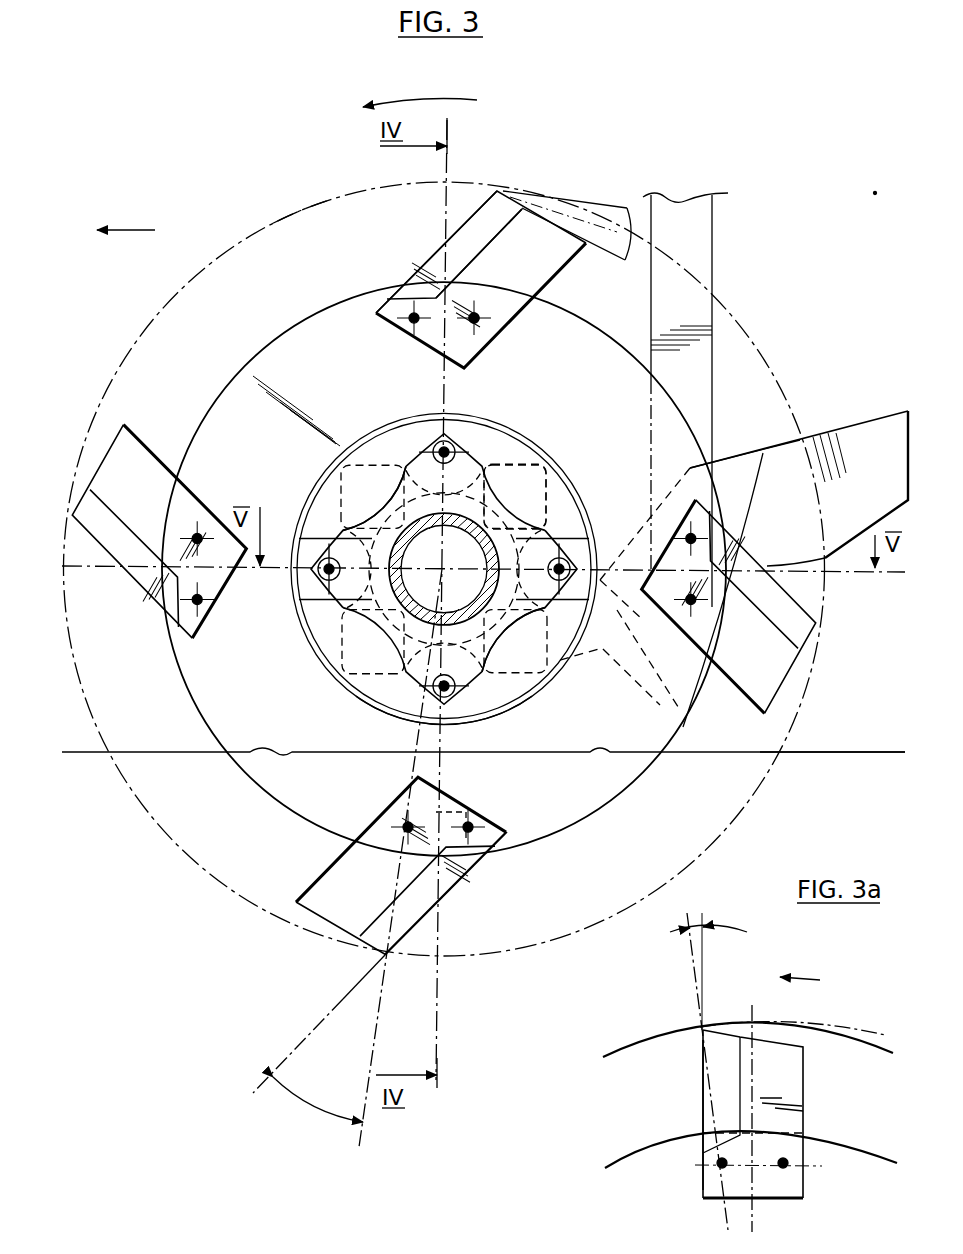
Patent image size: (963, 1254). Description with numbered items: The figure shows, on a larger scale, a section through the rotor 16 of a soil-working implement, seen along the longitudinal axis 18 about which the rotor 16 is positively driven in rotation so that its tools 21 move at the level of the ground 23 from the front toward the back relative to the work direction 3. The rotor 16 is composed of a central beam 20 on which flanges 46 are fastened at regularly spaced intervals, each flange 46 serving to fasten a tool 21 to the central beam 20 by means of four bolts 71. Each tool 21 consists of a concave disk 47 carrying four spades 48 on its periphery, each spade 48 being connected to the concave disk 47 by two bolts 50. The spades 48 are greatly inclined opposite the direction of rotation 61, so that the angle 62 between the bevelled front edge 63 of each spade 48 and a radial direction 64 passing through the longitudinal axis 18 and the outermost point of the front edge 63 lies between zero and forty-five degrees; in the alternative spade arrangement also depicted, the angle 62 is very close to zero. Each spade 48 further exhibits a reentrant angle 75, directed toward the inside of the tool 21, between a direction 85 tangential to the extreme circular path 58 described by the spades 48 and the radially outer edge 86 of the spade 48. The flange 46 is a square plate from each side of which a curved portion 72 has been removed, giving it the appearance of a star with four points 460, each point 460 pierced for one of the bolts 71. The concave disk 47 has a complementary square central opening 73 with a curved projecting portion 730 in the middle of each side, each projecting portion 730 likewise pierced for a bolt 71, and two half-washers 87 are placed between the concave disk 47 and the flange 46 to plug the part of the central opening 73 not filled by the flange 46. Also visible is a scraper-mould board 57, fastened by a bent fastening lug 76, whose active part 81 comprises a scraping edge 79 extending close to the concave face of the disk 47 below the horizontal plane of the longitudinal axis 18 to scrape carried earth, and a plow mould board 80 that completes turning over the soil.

In FIG. 3, the work direction 3 is at (143, 230).
In FIG. 3, the rotor 16 is at (182, 866).
In FIG. 3, the longitudinal axis 18 is at (446, 569).
In FIG. 3, the central beam 20 is at (357, 698).
In FIG. 3, the tools 21 is at (293, 372).
In FIG. 3, the ground 23 is at (873, 760).
In FIG. 3, the flange 46 is at (533, 697).
In FIG. 3, the concave disk 47 is at (483, 738).
In FIG. 3a, the concave disk 47 is at (628, 1175).
In FIG. 3, the spade 48 is at (517, 243).
In FIG. 3a, the spade 48 is at (795, 1082).
In FIG. 3, the bolts 50 is at (415, 325).
In FIG. 3a, the bolts 50 is at (758, 1163).
In FIG. 3, the scraper-mould board 57 is at (737, 477).
In FIG. 3, the extreme circular path 58 is at (273, 222).
In FIG. 3, the direction of rotation 61 is at (452, 98).
In FIG. 3a, the direction of rotation 61 is at (817, 980).
In FIG. 3, the angle 62 is at (302, 1100).
In FIG. 3a, the angle 62 is at (730, 932).
In FIG. 3, the front edge 63 is at (430, 262).
In FIG. 3a, the front edge 63 is at (700, 1087).
In FIG. 3, the radial direction 64 is at (382, 1002).
In FIG. 3a, the radial direction 64 is at (693, 972).
In FIG. 3, the bolts 71 is at (458, 448).
In FIG. 3, the curved portion 72 is at (343, 468).
In FIG. 3, the central opening 73 is at (362, 672).
In FIG. 3, the angle 75 is at (614, 248).
In FIG. 3, the fastening lug 76 is at (693, 252).
In FIG. 3, the scraping edge 79 is at (685, 715).
In FIG. 3, the plow mould board 80 is at (893, 491).
In FIG. 3, the active part 81 is at (670, 608).
In FIG. 3, the direction 85 is at (590, 200).
In FIG. 3, the radially outer edge 86 is at (565, 232).
In FIG. 3, the half-washers 87 is at (380, 438).
In FIG. 3, the points 460 is at (473, 325).
In FIG. 3, the curved projecting portion 730 is at (487, 483).